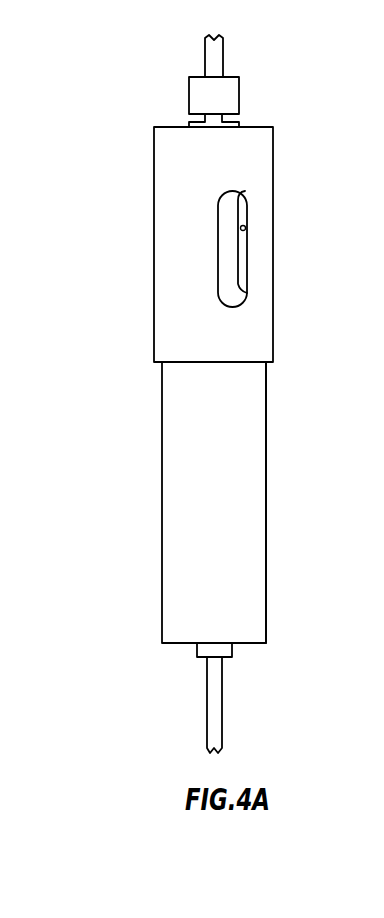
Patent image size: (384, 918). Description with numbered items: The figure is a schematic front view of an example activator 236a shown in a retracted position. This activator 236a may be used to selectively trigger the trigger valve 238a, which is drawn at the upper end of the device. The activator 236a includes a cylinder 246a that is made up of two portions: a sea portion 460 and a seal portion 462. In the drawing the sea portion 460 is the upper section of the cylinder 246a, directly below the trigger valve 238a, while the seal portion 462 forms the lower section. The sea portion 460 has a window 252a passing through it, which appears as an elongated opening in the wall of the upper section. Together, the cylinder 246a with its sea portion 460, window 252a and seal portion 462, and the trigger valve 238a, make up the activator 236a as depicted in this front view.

The activator 236a is at (150, 112).
The trigger valve 238a is at (239, 88).
The window 252a is at (245, 230).
The sea portion 460 is at (260, 290).
The seal portion 462 is at (266, 480).
The cylinder 246a is at (247, 528).